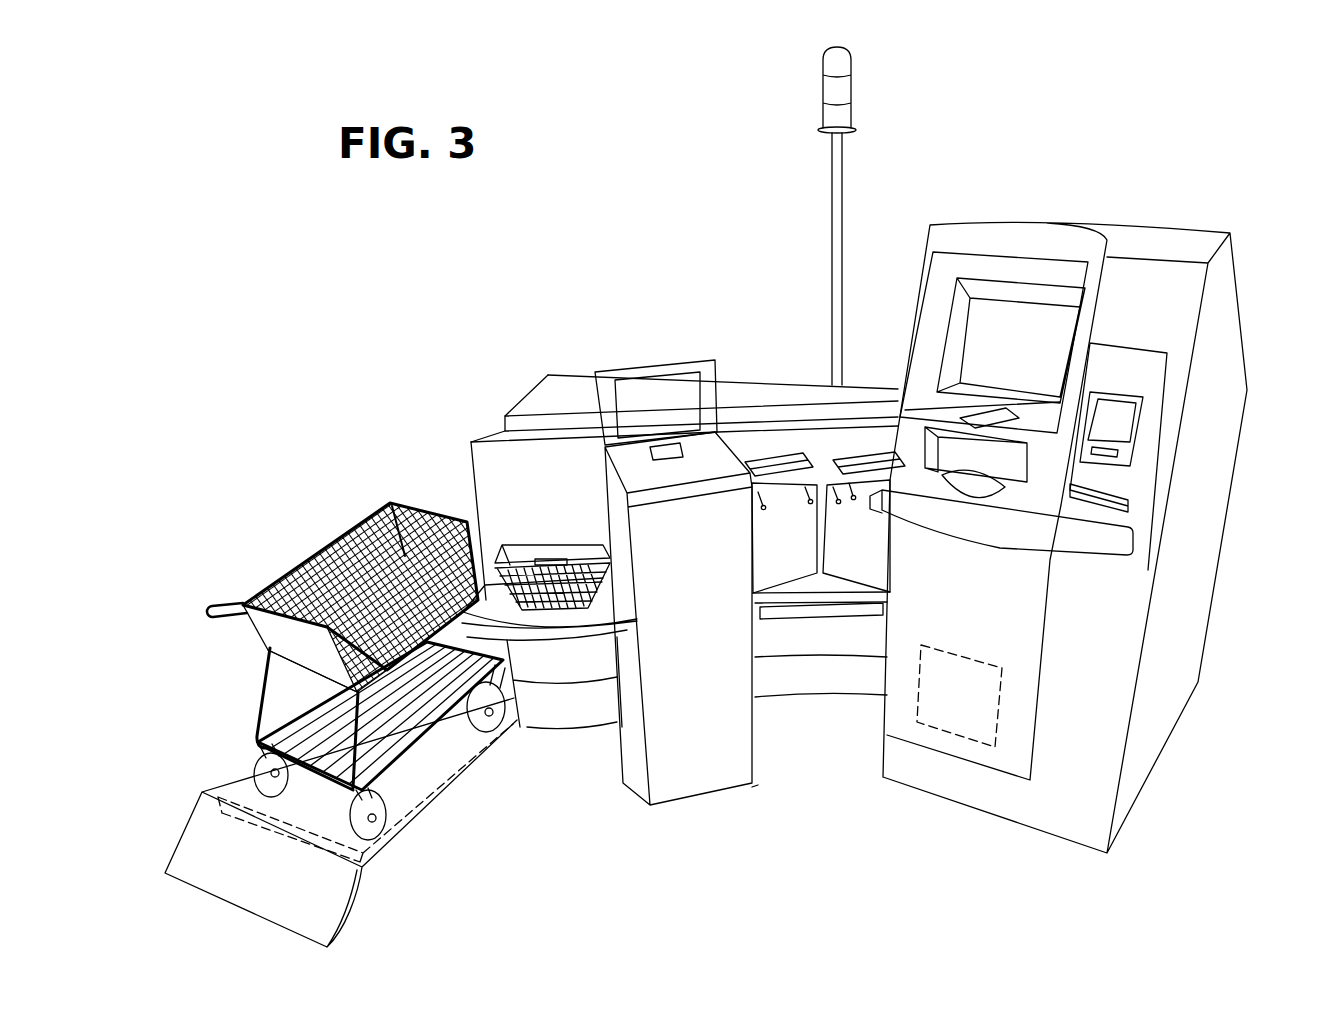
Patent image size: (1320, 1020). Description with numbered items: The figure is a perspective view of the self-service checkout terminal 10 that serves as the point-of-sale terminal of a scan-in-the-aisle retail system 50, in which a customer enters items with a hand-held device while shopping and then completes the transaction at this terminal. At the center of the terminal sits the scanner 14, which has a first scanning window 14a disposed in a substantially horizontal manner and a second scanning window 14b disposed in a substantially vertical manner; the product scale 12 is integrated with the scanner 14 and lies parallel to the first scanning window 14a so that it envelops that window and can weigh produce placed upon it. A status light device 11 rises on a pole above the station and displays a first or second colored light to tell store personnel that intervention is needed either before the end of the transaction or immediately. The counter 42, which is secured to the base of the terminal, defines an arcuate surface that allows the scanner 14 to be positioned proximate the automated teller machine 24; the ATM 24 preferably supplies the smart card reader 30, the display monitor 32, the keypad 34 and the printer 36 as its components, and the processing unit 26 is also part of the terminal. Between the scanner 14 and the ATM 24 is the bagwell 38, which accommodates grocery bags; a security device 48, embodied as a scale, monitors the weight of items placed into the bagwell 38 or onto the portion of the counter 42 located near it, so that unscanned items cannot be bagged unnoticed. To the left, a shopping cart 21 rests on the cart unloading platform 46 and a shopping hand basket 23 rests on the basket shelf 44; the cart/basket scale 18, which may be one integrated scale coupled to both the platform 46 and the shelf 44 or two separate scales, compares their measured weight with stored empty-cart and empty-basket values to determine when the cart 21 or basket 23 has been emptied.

The self-service checkout terminal 10 is at (418, 318).
The status light device 11 is at (853, 93).
The product scale 12 is at (632, 477).
The scanner 14 is at (681, 358).
The first scanning window 14a is at (668, 453).
The second scanning window 14b is at (640, 387).
The cart/basket scale 18 is at (557, 640).
The shopping cart 21 is at (330, 548).
The shopping hand basket 23 is at (567, 546).
The automated teller machine 24 is at (1221, 358).
The processing unit 26 is at (970, 672).
The smart card reader 30 is at (1118, 453).
The display monitor 32 is at (982, 324).
The keypad 34 is at (991, 412).
The printer 36 is at (1130, 501).
The bagwell 38 is at (826, 582).
The counter 42 is at (529, 425).
The basket shelf 44 is at (612, 606).
The cart unloading platform 46 is at (425, 765).
The security device 48 is at (885, 611).
The retail system 50 is at (1204, 98).